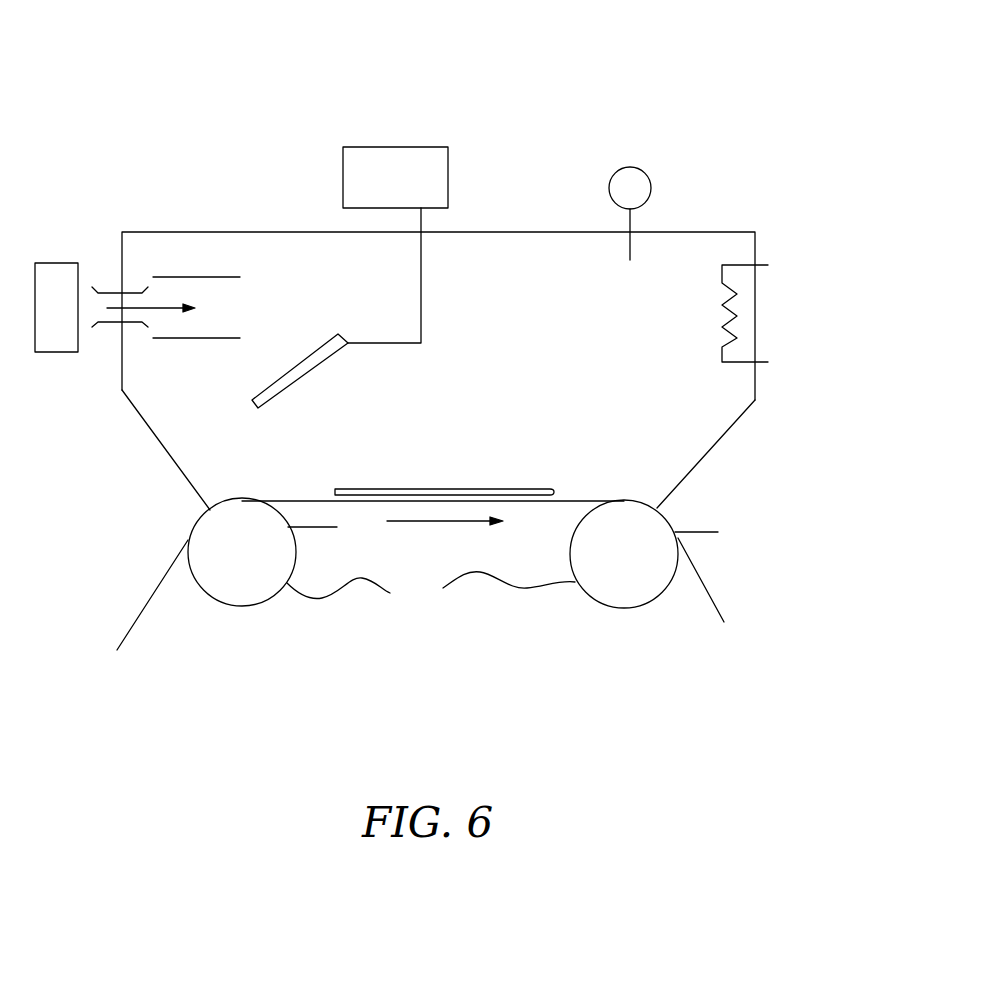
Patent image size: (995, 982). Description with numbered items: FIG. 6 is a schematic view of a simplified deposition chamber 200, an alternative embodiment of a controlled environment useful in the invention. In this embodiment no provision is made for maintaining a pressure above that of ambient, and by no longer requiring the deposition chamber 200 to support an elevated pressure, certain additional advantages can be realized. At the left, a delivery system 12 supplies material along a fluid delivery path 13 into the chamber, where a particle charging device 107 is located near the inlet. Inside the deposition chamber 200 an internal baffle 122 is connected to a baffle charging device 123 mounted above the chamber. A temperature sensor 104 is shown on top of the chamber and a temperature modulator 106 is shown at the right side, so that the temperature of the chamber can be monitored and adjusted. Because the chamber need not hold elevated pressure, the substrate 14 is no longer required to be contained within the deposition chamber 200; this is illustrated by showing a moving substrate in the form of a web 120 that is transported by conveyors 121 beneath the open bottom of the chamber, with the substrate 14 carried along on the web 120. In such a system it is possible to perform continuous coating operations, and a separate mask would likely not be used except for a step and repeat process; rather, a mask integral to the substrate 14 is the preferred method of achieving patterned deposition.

The deposition chamber 200 is at (564, 153).
The delivery system 12 is at (62, 262).
The fluid delivery path 13 is at (115, 308).
The particle charging device 107 is at (210, 277).
The baffle charging device 123 is at (414, 190).
The internal baffle 122 is at (317, 370).
The temperature sensor 104 is at (645, 188).
The temperature modulator 106 is at (745, 286).
The substrate 14 is at (478, 488).
The web 120 is at (162, 592).
The conveyor 121 is at (431, 593).